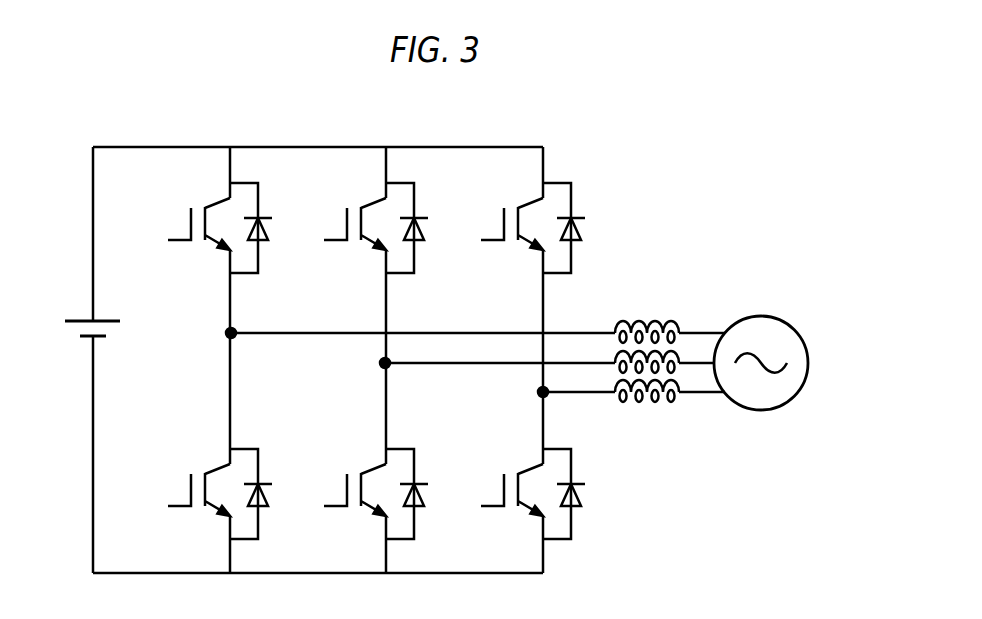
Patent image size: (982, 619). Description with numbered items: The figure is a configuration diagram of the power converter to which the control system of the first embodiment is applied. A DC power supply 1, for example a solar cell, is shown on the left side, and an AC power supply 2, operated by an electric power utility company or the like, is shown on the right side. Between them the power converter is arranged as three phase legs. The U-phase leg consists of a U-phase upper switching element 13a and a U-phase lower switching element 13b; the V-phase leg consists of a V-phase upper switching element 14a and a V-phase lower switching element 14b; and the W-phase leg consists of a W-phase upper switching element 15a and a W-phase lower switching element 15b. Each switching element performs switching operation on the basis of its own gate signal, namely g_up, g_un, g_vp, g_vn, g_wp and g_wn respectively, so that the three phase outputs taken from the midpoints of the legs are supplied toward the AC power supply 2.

The DC power supply 1 is at (82, 320).
The AC power supply 2 is at (758, 318).
The U-phase upper switching element 13a is at (213, 222).
The U-phase lower switching element 13b is at (213, 487).
The V-phase upper switching element 14a is at (369, 222).
The V-phase lower switching element 14b is at (369, 487).
The W-phase upper switching element 15a is at (526, 222).
The W-phase lower switching element 15b is at (526, 487).